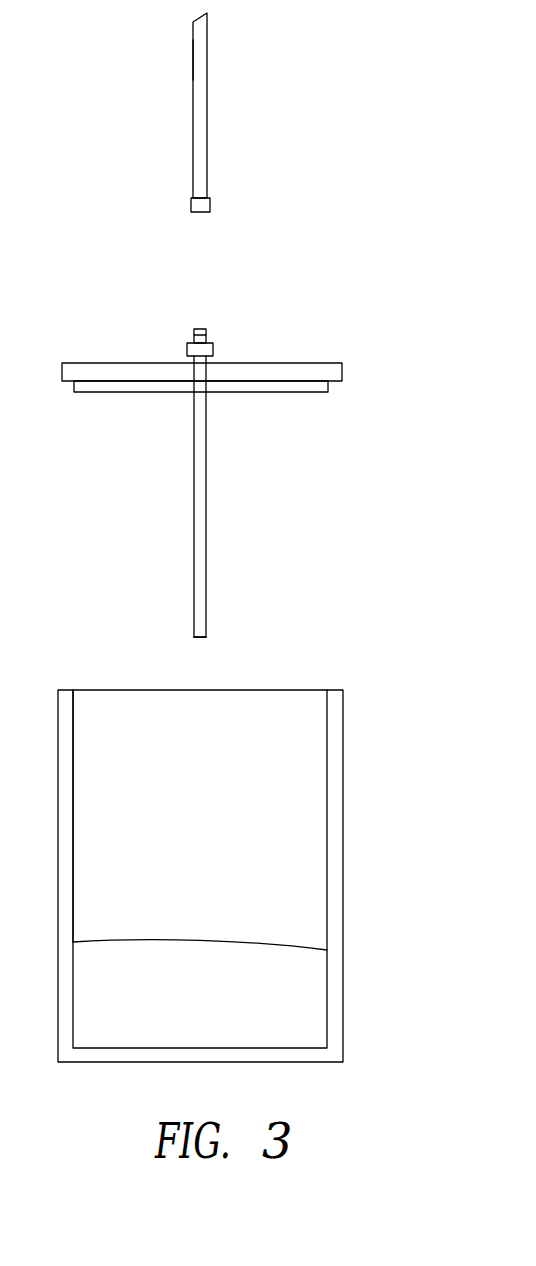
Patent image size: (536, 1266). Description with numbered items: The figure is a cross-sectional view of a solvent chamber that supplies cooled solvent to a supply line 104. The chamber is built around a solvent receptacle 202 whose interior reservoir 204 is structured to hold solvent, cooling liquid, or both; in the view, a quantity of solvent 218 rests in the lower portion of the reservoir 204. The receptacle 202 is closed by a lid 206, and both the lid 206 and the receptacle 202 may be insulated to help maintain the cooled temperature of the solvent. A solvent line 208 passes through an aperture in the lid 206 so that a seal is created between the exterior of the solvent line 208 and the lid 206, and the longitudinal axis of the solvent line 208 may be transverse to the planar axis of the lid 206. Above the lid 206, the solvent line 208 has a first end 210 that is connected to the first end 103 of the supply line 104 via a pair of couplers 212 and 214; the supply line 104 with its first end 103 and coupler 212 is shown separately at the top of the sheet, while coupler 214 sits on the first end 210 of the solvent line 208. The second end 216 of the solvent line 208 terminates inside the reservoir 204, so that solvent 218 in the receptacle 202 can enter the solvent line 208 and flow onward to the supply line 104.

The first end 103 is at (203, 128).
The supply line 104 is at (193, 58).
The coupler 212 is at (190, 207).
The first end 210 is at (207, 329).
The coupler 214 is at (187, 350).
The lid 206 is at (343, 368).
The solvent line 208 is at (207, 512).
The second end 216 is at (207, 637).
The solvent receptacle 202 is at (333, 742).
The interior reservoir 204 is at (263, 862).
The solvent 218 is at (295, 997).